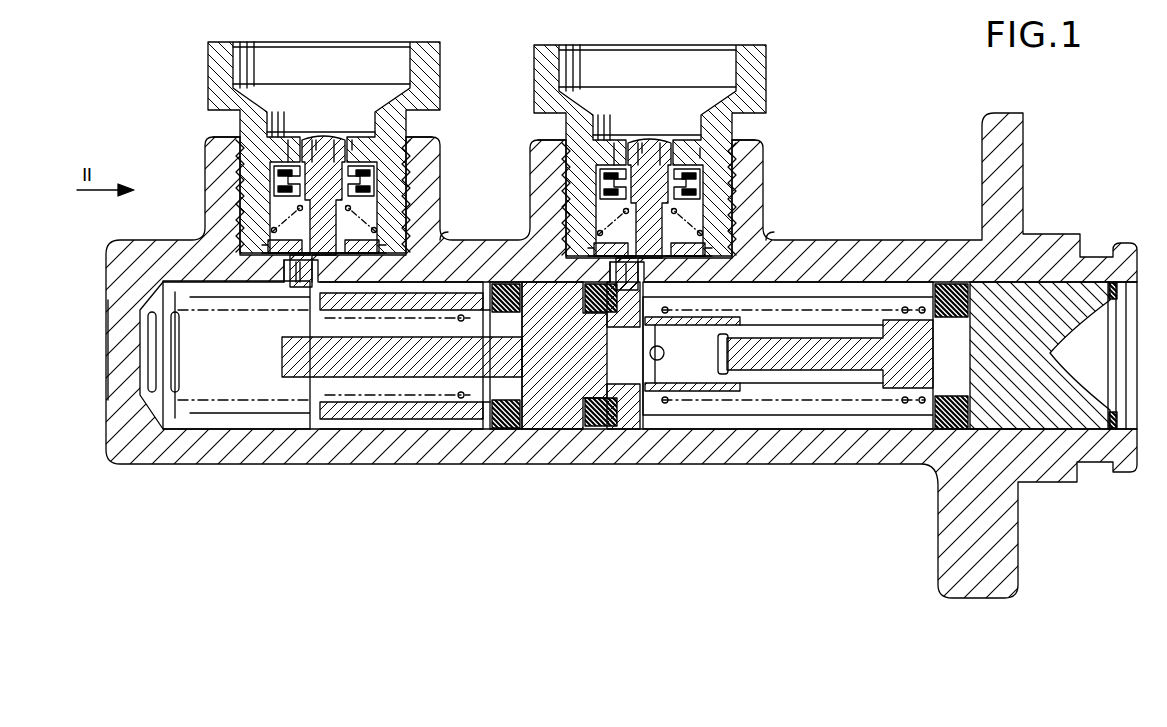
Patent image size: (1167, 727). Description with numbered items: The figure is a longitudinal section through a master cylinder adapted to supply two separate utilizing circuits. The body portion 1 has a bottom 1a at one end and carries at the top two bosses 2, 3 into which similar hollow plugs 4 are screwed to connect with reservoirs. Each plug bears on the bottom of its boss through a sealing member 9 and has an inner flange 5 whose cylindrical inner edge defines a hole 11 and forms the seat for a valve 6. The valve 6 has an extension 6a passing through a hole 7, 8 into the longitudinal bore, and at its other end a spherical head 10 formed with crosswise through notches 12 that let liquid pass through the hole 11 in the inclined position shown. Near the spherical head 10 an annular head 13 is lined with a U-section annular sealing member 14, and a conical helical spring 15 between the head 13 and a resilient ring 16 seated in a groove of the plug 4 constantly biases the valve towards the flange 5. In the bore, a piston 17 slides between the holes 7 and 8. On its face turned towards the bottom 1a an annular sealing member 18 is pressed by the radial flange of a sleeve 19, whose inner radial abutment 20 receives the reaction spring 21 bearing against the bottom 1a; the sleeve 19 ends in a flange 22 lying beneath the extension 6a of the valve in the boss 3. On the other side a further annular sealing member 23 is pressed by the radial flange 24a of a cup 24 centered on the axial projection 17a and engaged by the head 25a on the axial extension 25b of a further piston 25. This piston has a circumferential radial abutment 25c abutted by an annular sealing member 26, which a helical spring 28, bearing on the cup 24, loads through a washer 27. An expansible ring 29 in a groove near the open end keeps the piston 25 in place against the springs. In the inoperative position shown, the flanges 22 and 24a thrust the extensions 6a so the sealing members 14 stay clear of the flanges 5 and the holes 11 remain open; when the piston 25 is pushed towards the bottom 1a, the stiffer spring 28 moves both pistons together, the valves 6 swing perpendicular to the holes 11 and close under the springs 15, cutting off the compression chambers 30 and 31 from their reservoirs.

The body portion 1 is at (778, 455).
The bottom 1a is at (118, 358).
The boss 2 is at (757, 162).
The boss 3 is at (428, 155).
The hollow plug 4 is at (433, 95).
The flange 5 is at (288, 140).
The valve 6 is at (326, 228).
The extension 6a is at (444, 241).
The hole 7 is at (628, 300).
The hole 8 is at (306, 268).
The sealing member 9 is at (396, 232).
The spherical head 10 is at (326, 140).
The hole 11 is at (316, 138).
The through notches 12 is at (352, 140).
The annular head 13 is at (282, 183).
The annular sealing member 14 is at (372, 182).
The conical helical spring 15 is at (286, 213).
The resilient ring 16 is at (288, 268).
The piston 17 is at (560, 428).
The axial projection 17a is at (612, 368).
The annular sealing member 18 is at (511, 432).
The sleeve 19 is at (405, 425).
The inner radial abutment 20 is at (460, 425).
The reaction spring 21 is at (248, 420).
The flange 22 is at (332, 428).
The annular sealing member 23 is at (605, 432).
The cup 24 is at (690, 390).
The radial flange 24a is at (650, 432).
The further piston 25 is at (1045, 435).
The head 25a is at (718, 347).
The axial extension 25b is at (790, 358).
The circumferential radial abutment 25c is at (938, 435).
The annular sealing member 26 is at (952, 300).
The washer 27 is at (908, 302).
The helical spring 28 is at (826, 310).
The expansible ring 29 is at (1118, 420).
The compression chamber 30 is at (824, 440).
The compression chamber 31 is at (196, 437).